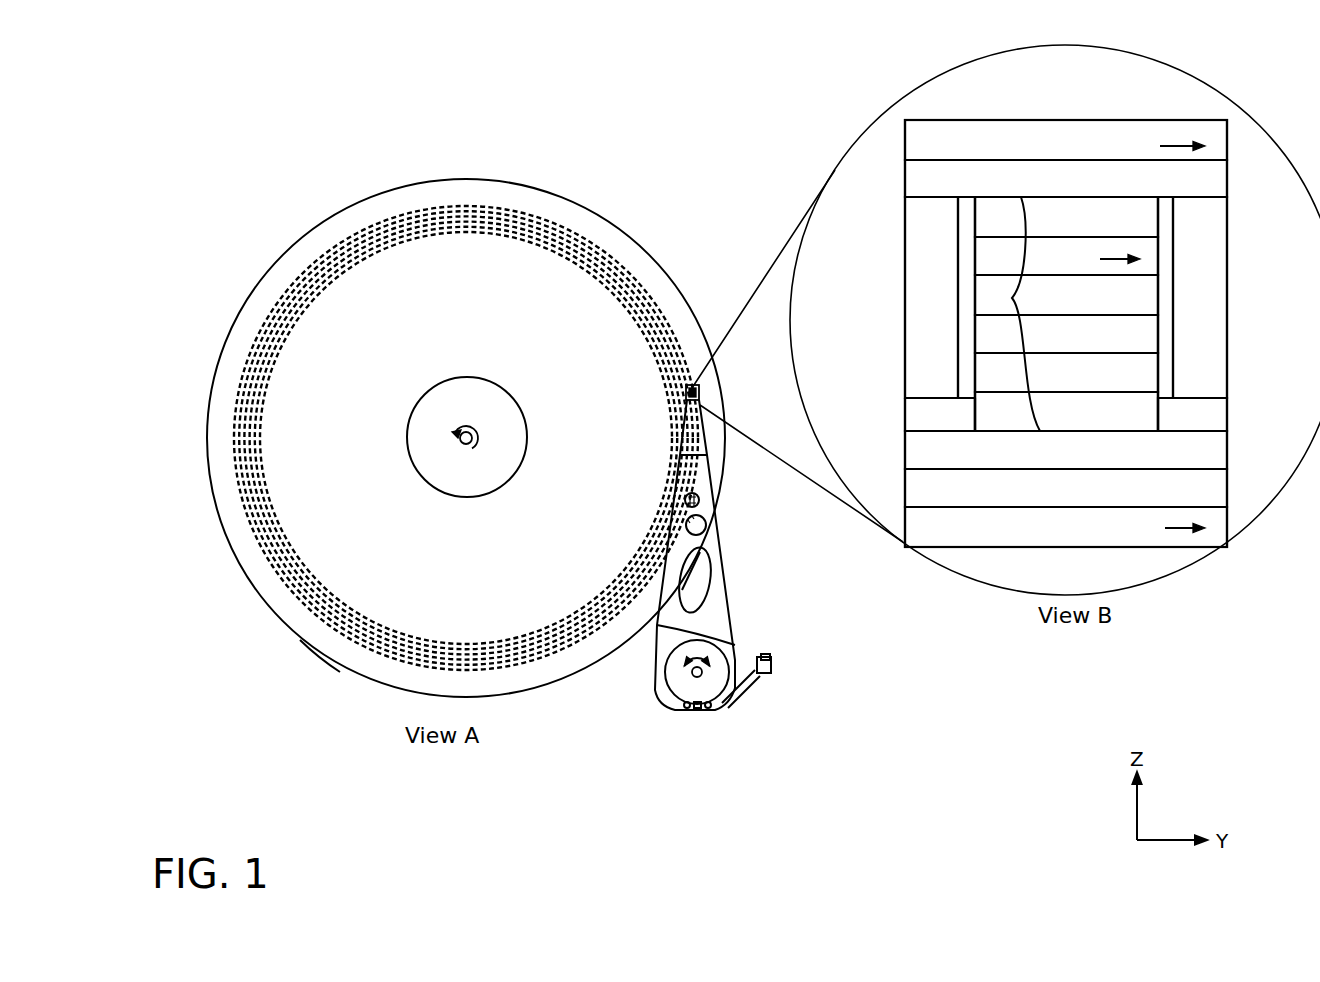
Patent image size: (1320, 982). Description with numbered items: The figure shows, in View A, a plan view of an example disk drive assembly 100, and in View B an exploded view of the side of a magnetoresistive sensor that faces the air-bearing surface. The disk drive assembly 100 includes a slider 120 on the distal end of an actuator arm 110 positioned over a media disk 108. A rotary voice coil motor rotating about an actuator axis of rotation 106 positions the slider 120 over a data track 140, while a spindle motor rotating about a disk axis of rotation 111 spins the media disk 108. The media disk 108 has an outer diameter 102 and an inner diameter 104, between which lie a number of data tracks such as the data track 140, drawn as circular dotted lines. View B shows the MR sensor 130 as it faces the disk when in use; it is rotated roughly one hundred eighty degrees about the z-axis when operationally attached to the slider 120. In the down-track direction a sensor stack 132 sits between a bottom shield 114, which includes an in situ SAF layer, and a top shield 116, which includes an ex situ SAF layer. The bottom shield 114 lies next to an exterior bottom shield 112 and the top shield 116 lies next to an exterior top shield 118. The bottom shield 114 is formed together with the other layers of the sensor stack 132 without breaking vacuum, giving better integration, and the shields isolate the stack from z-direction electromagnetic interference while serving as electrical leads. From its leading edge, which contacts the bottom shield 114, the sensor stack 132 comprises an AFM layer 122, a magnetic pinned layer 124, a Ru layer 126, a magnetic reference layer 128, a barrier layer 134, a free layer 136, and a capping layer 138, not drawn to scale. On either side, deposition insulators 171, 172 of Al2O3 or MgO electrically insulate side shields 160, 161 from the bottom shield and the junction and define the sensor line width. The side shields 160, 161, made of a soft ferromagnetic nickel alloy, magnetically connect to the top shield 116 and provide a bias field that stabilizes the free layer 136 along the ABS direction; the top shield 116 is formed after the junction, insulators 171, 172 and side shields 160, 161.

The disk drive assembly 100 is at (305, 133).
The outer diameter 102 is at (286, 256).
The inner diameter 104 is at (408, 441).
The actuator axis of rotation 106 is at (697, 672).
The media disk 108 is at (306, 645).
The actuator arm 110 is at (718, 543).
The disk axis of rotation 111 is at (470, 428).
The exterior bottom shield 112 is at (1066, 527).
The bottom shield 114 is at (1066, 488).
The top shield 116 is at (1066, 178).
The exterior top shield 118 is at (1066, 140).
The slider 120 is at (700, 396).
The AFM layer 122 is at (1066, 450).
The magnetic pinned layer 124 is at (1066, 411).
The Ru layer 126 is at (1066, 372).
The magnetic reference layer 128 is at (1066, 334).
The MR sensor 130 is at (987, 110).
The sensor stack 132 is at (1002, 330).
The barrier layer 134 is at (1066, 295).
The free layer 136 is at (1066, 256).
The capping layer 138 is at (1066, 217).
The data track 140 is at (470, 209).
The side shield 160 is at (931, 297).
The side shield 161 is at (1200, 297).
The deposition insulator 171 is at (940, 414).
The deposition insulator 172 is at (1192, 414).